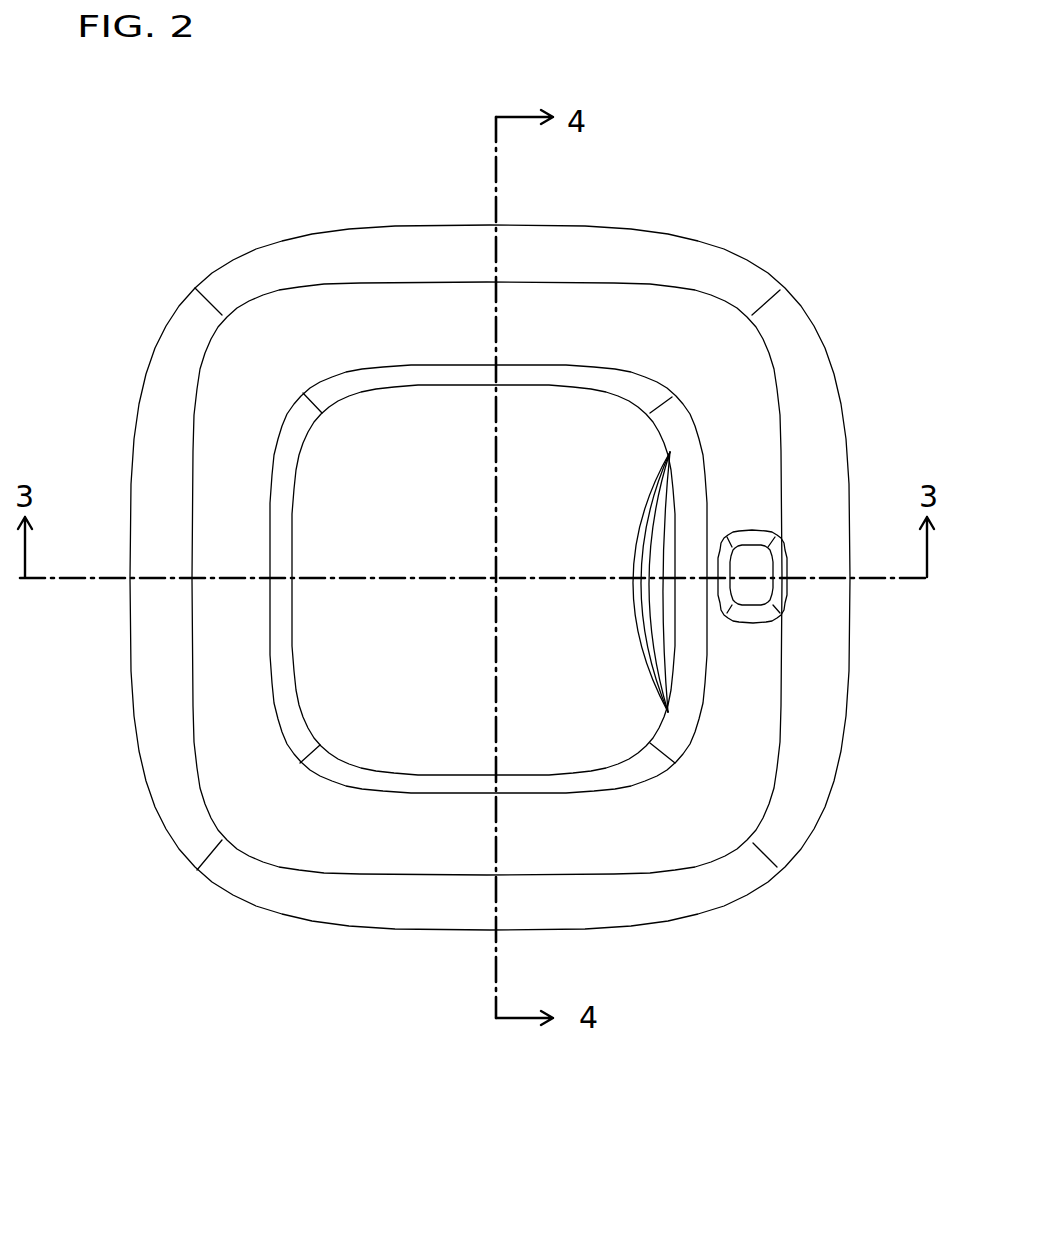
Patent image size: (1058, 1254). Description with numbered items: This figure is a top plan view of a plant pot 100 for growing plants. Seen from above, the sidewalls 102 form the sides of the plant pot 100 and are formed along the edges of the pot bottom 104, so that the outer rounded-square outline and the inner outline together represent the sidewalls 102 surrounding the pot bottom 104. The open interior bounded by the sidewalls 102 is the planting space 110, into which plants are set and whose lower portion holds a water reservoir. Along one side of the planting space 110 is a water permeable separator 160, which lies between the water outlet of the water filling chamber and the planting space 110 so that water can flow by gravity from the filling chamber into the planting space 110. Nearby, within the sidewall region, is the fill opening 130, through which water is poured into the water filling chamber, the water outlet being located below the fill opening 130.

The plant pot 100 is at (493, 1080).
The sidewalls 102 is at (475, 888).
The pot bottom 104 is at (595, 738).
The planting space 110 is at (450, 417).
The fill opening 130 is at (757, 560).
The water permeable separator 160 is at (639, 548).